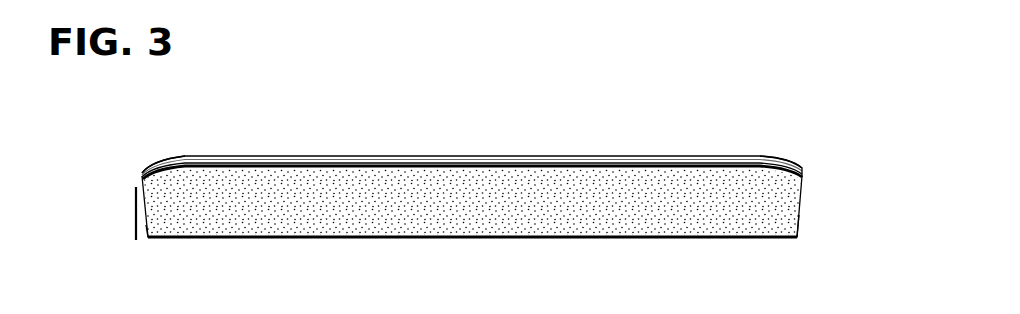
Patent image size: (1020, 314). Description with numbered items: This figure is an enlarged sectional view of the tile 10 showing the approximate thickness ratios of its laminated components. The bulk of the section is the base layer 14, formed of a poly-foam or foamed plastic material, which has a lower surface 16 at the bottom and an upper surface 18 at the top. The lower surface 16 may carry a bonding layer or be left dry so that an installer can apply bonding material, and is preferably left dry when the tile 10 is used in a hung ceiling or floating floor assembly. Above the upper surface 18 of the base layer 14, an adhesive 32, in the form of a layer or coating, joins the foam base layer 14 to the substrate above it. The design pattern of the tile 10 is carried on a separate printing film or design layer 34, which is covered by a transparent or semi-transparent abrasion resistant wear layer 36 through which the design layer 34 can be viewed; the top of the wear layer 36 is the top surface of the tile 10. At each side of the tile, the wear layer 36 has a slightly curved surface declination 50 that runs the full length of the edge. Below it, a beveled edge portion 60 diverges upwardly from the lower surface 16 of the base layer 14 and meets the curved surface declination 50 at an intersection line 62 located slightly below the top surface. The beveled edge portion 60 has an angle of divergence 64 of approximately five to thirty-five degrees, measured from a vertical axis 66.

The tile 10 is at (266, 123).
The base layer 14 is at (277, 222).
The lower surface 16 is at (440, 237).
The upper surface 18 is at (559, 166).
The adhesive 32 is at (803, 177).
The design layer 34 is at (617, 160).
The wear layer 36 is at (672, 157).
The curved surface declination 50 is at (792, 160).
The beveled edge portion 60 is at (798, 223).
The intersection line 62 is at (141, 173).
The angle of divergence 64 is at (141, 220).
The vertical axis 66 is at (135, 202).